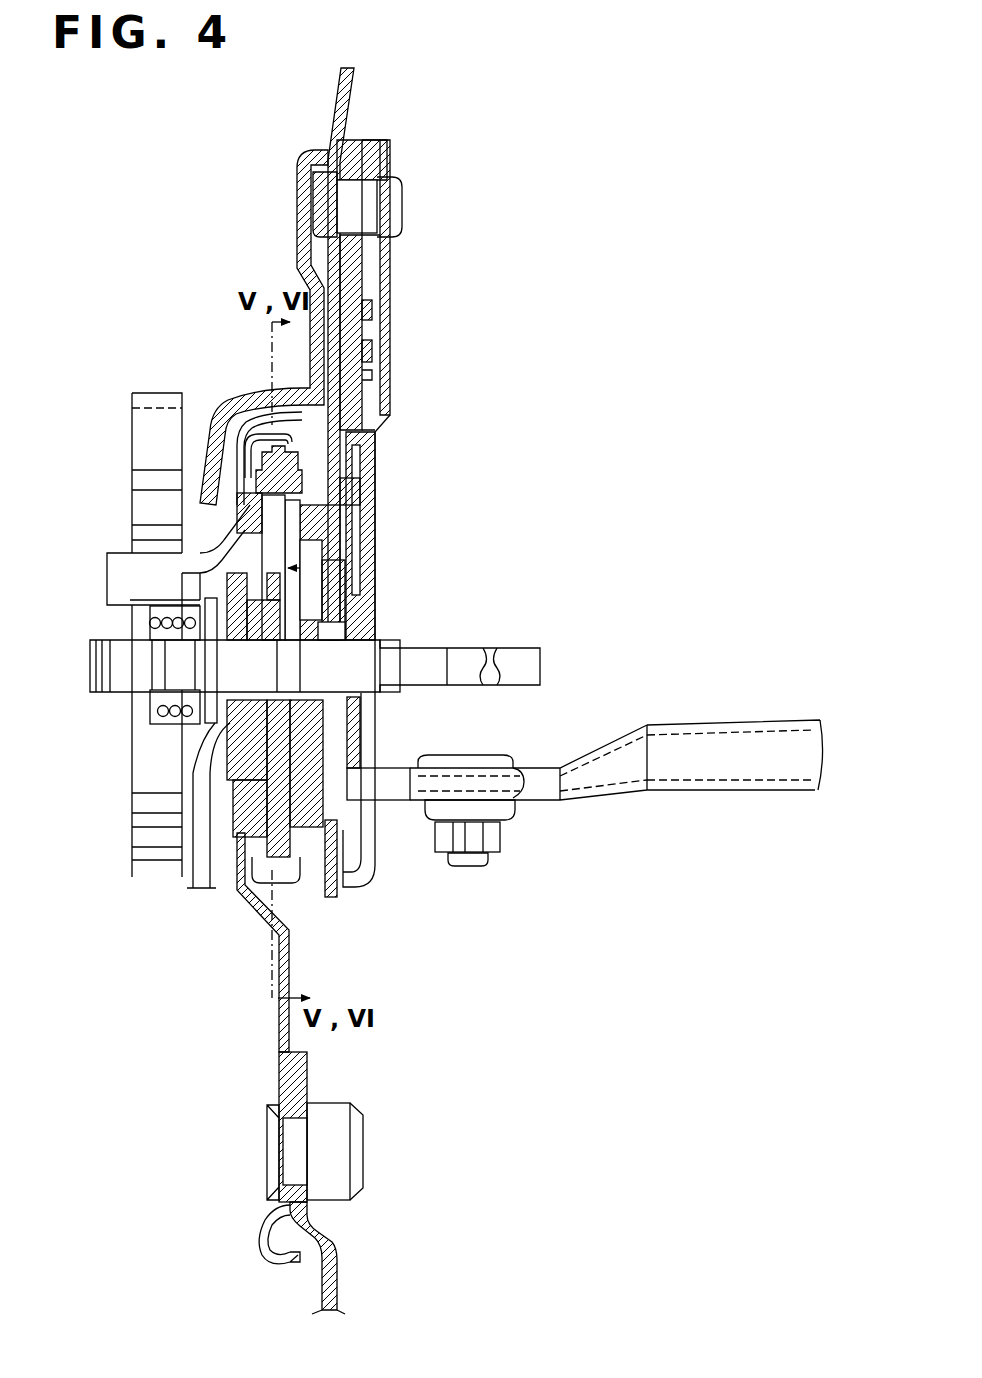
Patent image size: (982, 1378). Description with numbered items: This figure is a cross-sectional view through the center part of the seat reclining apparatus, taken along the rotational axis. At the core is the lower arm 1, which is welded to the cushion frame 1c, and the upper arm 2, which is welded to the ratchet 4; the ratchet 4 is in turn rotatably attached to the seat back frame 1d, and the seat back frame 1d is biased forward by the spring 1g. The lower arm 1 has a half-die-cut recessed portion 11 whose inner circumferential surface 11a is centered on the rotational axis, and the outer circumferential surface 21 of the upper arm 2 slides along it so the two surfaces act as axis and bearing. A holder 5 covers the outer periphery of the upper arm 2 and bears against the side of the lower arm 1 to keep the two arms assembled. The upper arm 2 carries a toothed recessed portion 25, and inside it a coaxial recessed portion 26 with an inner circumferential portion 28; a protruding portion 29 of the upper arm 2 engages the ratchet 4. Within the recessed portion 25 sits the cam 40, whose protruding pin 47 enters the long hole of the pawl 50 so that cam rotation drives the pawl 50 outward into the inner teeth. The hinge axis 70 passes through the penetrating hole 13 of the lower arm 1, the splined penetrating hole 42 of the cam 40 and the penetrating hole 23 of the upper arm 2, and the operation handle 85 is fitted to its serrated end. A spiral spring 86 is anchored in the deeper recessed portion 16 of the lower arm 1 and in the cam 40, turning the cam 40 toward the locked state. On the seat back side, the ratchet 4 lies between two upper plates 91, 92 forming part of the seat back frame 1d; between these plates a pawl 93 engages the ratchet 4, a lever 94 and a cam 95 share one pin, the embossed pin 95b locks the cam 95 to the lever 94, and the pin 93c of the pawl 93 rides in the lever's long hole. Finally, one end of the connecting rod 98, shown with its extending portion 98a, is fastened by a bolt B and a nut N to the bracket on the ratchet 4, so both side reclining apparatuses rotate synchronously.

The lower arm 1 is at (235, 516).
The cushion frame 1c is at (279, 1044).
The seat back frame 1d is at (350, 98).
The spring 1g is at (132, 850).
The upper arm 2 is at (370, 490).
The ratchet 4 is at (370, 480).
The holder 5 is at (300, 900).
The recessed portion 11 is at (237, 502).
The inner circumferential surface 11a is at (258, 470).
The penetrating hole 13 is at (175, 680).
The recessed portion 16 is at (262, 718).
The outer circumferential surface 21 is at (333, 890).
The penetrating hole 23 is at (370, 627).
The recessed portion 25 is at (370, 548).
The recessed portion 26 is at (370, 570).
The inner circumferential portion 28 is at (370, 517).
The protruding portion 29 is at (370, 533).
The cam 40 is at (370, 597).
The penetrating hole 42 is at (400, 682).
The protruding pin 47 is at (362, 745).
The pawl 50 is at (270, 793).
The hinge axis 70 is at (88, 660).
The operation handle 85 is at (213, 895).
The spring 86 is at (240, 740).
The upper plate 91 is at (298, 210).
The upper plate 92 is at (393, 252).
The pawl 93 is at (390, 423).
The pin 93c is at (390, 373).
The lever 94 is at (390, 330).
The cam 95 is at (390, 270).
The pin 95b is at (390, 308).
The rod 98 is at (657, 718).
The lever arm portion 98a is at (742, 720).
The bolt B is at (505, 757).
The nut N is at (503, 847).